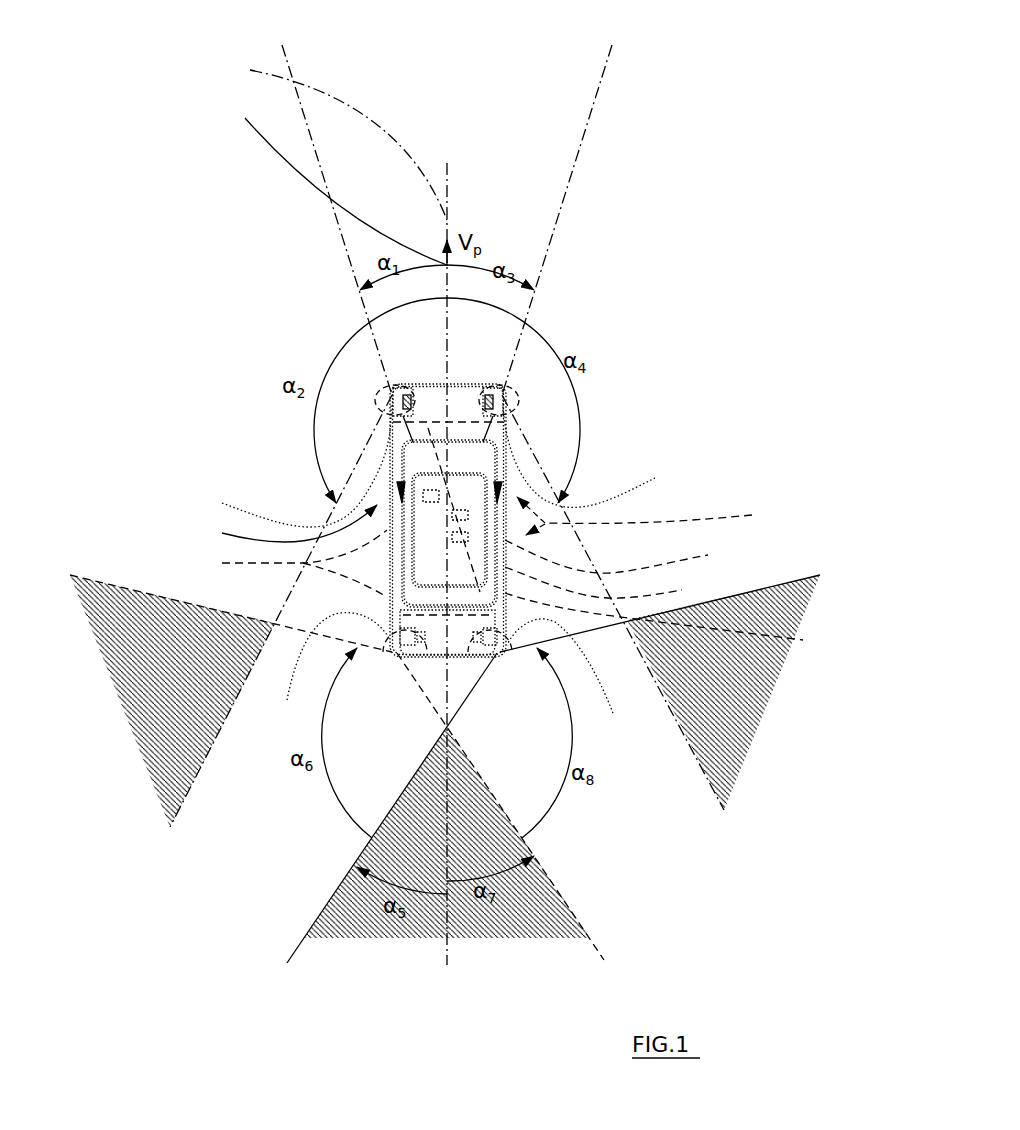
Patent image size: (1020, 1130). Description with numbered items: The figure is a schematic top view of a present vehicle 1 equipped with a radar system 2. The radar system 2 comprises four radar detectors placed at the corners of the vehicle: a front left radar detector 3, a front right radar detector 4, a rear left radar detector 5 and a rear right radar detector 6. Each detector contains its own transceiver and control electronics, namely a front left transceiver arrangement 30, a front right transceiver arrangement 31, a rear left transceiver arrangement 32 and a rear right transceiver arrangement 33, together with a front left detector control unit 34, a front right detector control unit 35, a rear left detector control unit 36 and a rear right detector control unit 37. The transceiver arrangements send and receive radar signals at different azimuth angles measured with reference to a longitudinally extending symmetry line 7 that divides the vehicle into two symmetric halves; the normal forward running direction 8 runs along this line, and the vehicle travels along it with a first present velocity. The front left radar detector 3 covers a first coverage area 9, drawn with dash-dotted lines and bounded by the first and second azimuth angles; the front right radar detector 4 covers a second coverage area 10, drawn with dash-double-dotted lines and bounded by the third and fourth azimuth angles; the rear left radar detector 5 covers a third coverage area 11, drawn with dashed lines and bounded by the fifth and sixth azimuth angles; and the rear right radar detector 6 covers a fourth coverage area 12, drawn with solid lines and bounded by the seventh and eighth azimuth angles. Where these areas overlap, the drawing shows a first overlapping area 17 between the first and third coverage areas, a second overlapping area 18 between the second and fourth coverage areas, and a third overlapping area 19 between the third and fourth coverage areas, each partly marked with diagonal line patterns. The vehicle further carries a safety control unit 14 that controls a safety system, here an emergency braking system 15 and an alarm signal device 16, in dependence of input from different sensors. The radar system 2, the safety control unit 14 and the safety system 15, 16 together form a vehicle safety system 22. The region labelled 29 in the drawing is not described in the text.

The present vehicle 1 is at (287, 523).
The radar system 2 is at (292, 563).
The front left radar detector 3 is at (294, 466).
The front right radar detector 4 is at (588, 456).
The rear left radar detector 5 is at (334, 672).
The rear right radar detector 6 is at (570, 681).
The symmetry line 7 is at (335, 139).
The normal forward running direction 8 is at (335, 184).
The first coverage area 9 is at (247, 400).
The second coverage area 10 is at (667, 407).
The third coverage area 11 is at (275, 807).
The fourth coverage area 12 is at (628, 862).
The safety control unit 14 is at (668, 623).
The emergency braking system 15 is at (623, 556).
The alarm signal device 16 is at (609, 584).
The first overlapping area 17 is at (190, 703).
The second overlapping area 18 is at (717, 710).
The third overlapping area 19 is at (547, 922).
The vehicle safety system 22 is at (652, 516).
The front region 29 is at (413, 200).
The front left transceiver arrangement 30 is at (400, 388).
The front right transceiver arrangement 31 is at (495, 388).
The rear left transceiver arrangement 32 is at (398, 657).
The rear right transceiver arrangement 33 is at (499, 657).
The front left detector control unit 34 is at (412, 395).
The front right detector control unit 35 is at (487, 395).
The rear left detector control unit 36 is at (425, 657).
The rear right detector control unit 37 is at (467, 657).